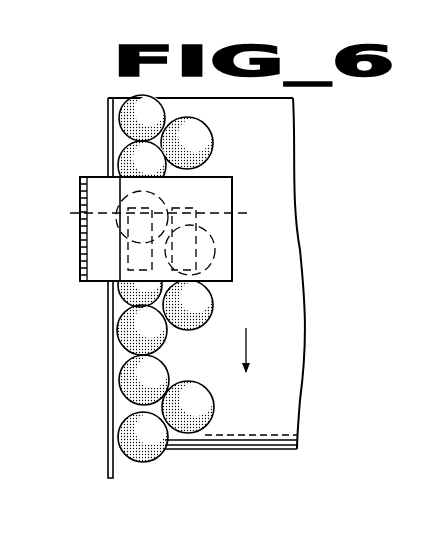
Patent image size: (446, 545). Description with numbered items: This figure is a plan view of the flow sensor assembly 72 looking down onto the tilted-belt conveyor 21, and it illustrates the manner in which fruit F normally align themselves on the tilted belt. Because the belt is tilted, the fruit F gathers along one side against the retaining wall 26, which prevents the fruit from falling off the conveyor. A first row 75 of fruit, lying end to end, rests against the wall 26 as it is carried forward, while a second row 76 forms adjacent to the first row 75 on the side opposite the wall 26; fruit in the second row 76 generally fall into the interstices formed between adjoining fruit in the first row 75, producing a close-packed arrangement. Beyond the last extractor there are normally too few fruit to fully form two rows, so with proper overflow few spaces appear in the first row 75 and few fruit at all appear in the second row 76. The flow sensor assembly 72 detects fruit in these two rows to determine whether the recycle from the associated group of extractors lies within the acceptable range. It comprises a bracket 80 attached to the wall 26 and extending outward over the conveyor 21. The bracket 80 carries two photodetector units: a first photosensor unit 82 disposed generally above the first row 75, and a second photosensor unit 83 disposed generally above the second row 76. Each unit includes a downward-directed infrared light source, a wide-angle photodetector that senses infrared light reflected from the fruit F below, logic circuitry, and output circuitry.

The tilted-belt discharge conveyor 21 is at (288, 408).
The retaining wall 26 is at (108, 342).
The flow sensor assembly 72 is at (238, 187).
The first row 75 is at (137, 463).
The second row 76 is at (192, 450).
The bracket 80 is at (216, 182).
The first photosensor unit 82 is at (87, 221).
The second photosensor unit 83 is at (175, 218).
The fruit F is at (132, 153).